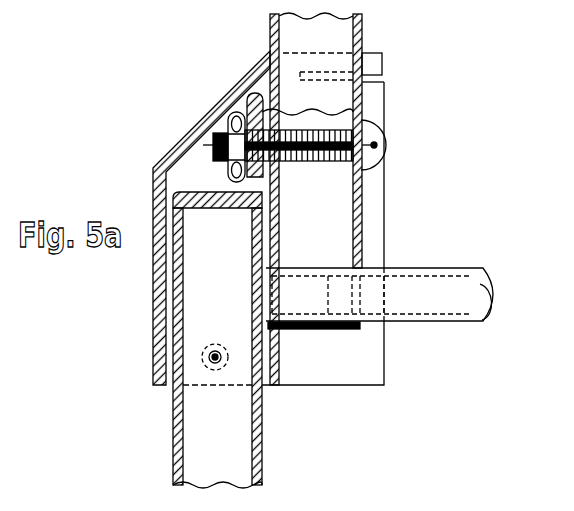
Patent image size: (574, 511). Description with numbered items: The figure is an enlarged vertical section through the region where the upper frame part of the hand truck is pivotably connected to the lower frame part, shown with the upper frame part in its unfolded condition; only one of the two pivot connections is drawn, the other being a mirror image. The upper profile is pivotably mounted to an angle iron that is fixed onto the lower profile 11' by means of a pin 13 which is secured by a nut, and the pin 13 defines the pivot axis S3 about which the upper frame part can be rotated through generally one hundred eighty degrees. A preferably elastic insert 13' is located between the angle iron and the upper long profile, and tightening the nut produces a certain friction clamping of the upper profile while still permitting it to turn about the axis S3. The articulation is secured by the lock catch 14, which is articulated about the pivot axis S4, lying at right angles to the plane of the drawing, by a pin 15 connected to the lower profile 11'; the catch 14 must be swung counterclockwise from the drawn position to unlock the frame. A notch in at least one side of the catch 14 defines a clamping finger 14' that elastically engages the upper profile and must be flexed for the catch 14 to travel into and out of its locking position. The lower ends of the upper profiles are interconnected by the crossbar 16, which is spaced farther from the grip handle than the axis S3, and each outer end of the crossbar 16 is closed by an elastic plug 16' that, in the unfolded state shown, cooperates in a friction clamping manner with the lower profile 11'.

The lower profile 11' is at (187, 340).
The pin 13 is at (325, 163).
The elastic insert 13' is at (385, 130).
The lock catch 14 is at (196, 218).
The clamping finger 14' is at (398, 51).
The pin 15 is at (211, 370).
The crossbar 16 is at (384, 270).
The elastic plug 16' is at (311, 373).
The pivot axis S3 is at (516, 144).
The pivot axis S4 is at (215, 343).